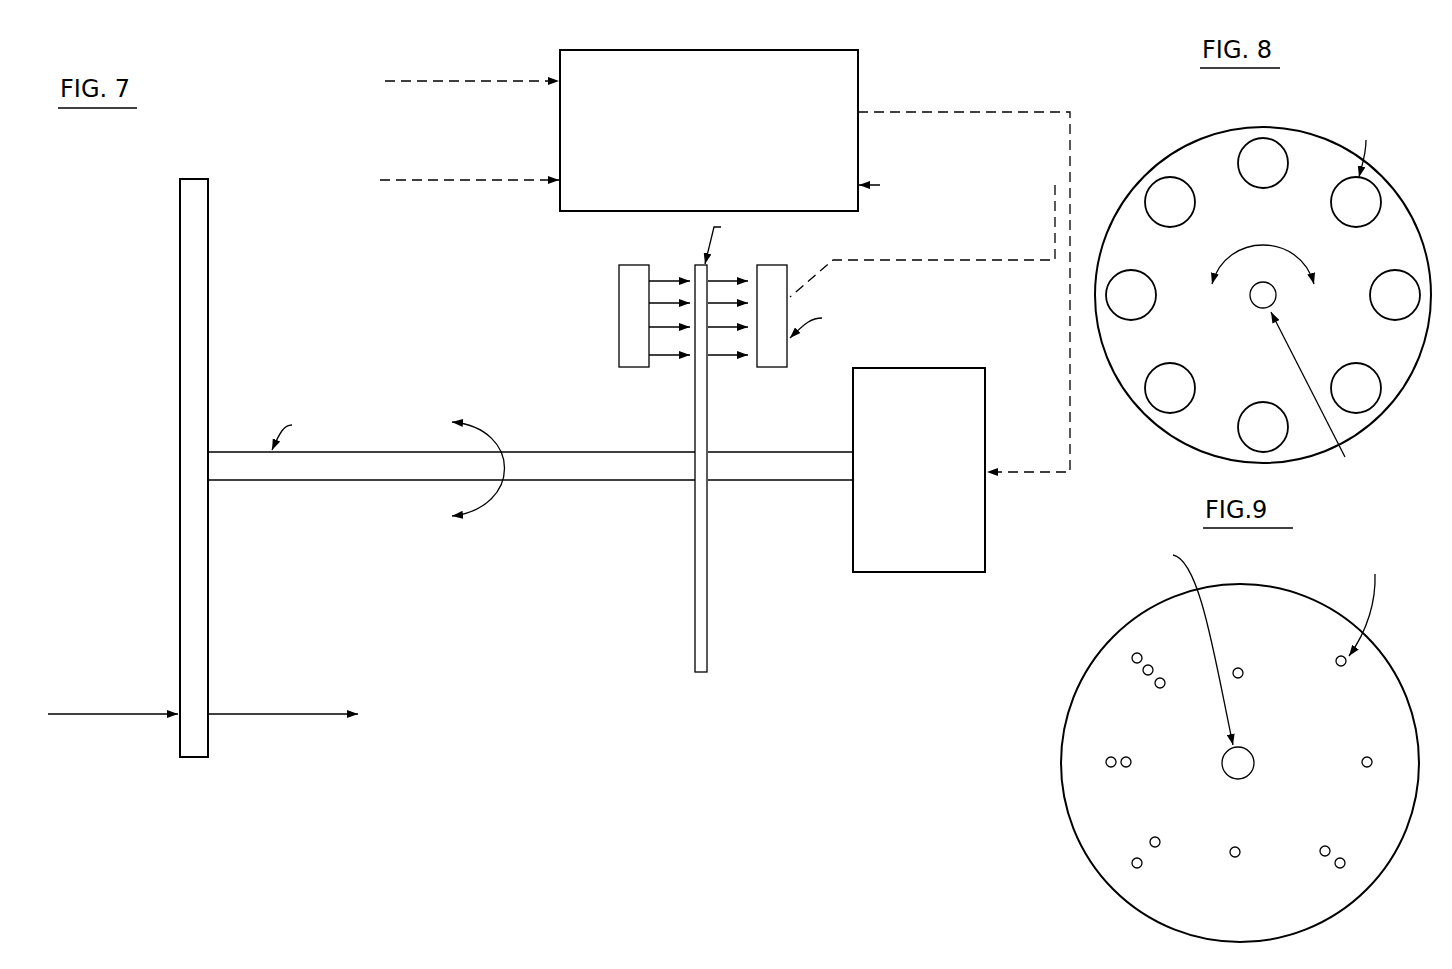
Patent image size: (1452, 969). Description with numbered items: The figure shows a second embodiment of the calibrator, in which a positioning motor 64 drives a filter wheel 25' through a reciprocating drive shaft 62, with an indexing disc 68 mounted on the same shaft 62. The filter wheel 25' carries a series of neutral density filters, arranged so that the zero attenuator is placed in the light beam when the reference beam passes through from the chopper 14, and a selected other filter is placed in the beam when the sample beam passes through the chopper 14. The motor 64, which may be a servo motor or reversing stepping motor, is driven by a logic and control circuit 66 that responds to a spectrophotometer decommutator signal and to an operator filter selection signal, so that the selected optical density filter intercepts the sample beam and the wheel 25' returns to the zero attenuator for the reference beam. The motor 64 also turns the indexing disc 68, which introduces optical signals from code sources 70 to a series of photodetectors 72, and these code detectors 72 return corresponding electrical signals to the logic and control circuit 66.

In FIG. 7, the filter wheel 25' is at (222, 468).
In FIG. 8, the filter wheel 25' is at (1264, 270).
In FIG. 7, the reciprocating drive shaft 62 is at (350, 470).
In FIG. 8, the reciprocating drive shaft 62 is at (1340, 394).
In FIG. 9, the reciprocating drive shaft 62 is at (1150, 660).
In FIG. 7, the positioning motor 64 is at (932, 560).
In FIG. 7, the logic and control circuit 66 is at (850, 70).
In FIG. 7, the indexing disc 68 is at (700, 540).
In FIG. 9, the indexing disc 68 is at (1092, 713).
In FIG. 7, the code sources 70 is at (618, 320).
In FIG. 7, the photodetectors 72 is at (770, 360).
In FIG. 7, the chopper 14 is at (219, 742).